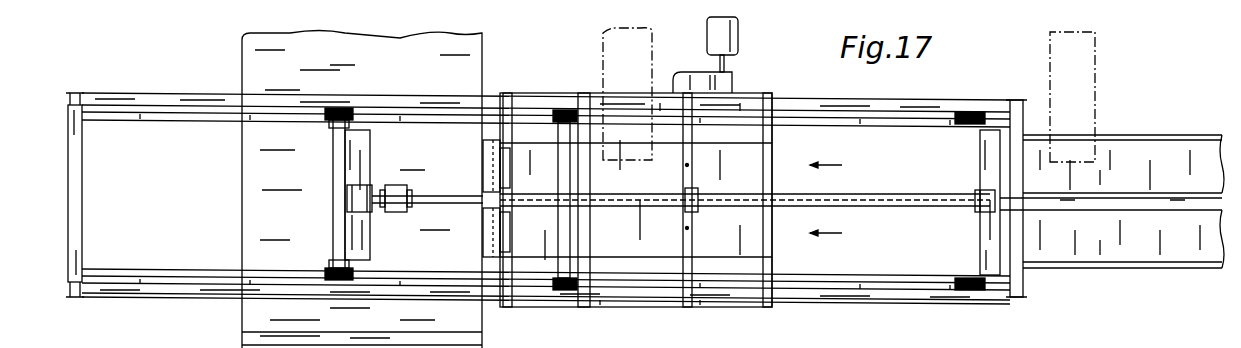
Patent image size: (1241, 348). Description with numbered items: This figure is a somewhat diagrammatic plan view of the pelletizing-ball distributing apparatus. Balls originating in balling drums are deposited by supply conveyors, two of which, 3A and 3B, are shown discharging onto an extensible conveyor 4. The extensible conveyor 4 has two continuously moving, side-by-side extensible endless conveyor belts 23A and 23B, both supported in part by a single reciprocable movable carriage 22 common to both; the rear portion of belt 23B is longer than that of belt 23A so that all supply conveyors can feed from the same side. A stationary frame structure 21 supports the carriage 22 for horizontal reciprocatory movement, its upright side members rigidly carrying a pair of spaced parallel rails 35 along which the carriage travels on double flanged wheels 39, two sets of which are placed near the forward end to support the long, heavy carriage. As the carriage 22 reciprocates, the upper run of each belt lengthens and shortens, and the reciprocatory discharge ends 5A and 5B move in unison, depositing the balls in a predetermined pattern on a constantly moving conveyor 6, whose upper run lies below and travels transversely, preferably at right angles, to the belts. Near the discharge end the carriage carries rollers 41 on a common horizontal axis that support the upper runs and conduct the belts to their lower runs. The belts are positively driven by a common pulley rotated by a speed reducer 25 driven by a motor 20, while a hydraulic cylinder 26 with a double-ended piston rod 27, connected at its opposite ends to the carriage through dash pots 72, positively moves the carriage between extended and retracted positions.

The conveyor 6 is at (236, 334).
The stationary frame structure 21 is at (546, 199).
The rails 35 is at (188, 117).
The double flanged wheels 39 is at (330, 118).
The dash pots 72 is at (360, 188).
The hydraulic cylinder 26 is at (455, 203).
The double-ended piston rod 27 is at (865, 206).
The discharge end 5A is at (483, 152).
The discharge end 5B is at (483, 234).
The rollers 41 is at (497, 165).
The extensible conveyor 4 is at (610, 310).
The reciprocable movable carriage 22 is at (1002, 173).
The extensible endless conveyor belt 23A is at (1152, 158).
The extensible endless conveyor belt 23B is at (1120, 262).
The supply conveyor 3A is at (600, 40).
The supply conveyor 3B is at (1095, 68).
The motor 20 is at (738, 35).
The speed reducer 25 is at (728, 80).